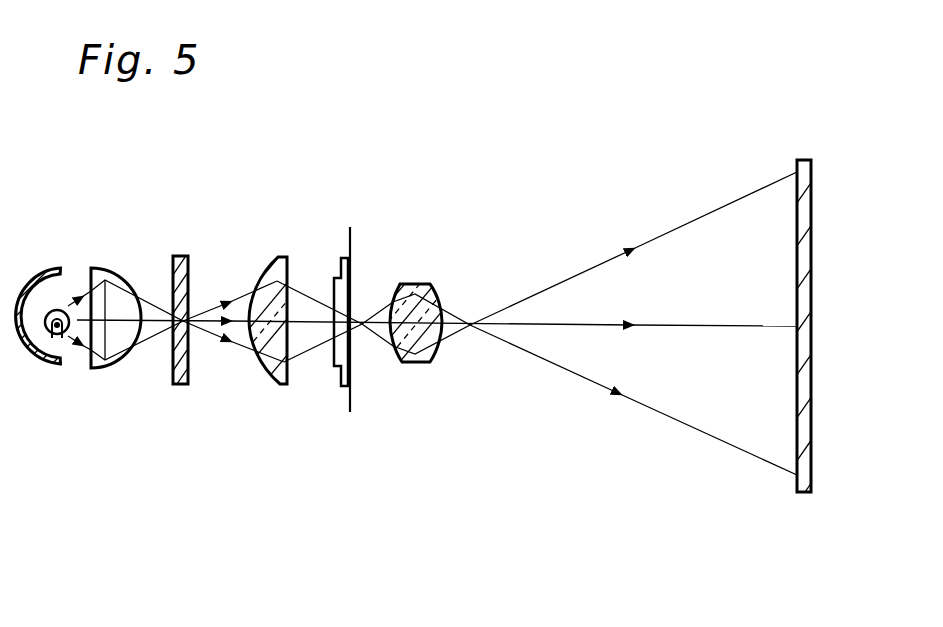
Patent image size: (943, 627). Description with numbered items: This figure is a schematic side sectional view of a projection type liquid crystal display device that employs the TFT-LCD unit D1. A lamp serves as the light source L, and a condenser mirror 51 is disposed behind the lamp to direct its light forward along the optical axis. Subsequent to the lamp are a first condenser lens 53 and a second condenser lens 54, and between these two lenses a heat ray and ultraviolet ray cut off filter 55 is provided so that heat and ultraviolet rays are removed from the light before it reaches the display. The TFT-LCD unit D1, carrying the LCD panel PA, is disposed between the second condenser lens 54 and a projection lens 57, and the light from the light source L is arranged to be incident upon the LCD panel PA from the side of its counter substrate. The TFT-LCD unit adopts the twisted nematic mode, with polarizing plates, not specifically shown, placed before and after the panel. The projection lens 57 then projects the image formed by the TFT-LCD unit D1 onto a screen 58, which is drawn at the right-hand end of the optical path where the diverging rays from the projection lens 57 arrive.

The condenser mirror 51 is at (48, 368).
The light source L is at (60, 309).
The first condenser lens 53 is at (104, 269).
The heat ray and ultraviolet ray cut off filter 55 is at (179, 386).
The second condenser lens 54 is at (273, 385).
The TFT-LCD unit D1 is at (364, 204).
The LCD panel PA is at (353, 280).
The projection lens 57 is at (414, 363).
The screen 58 is at (797, 423).